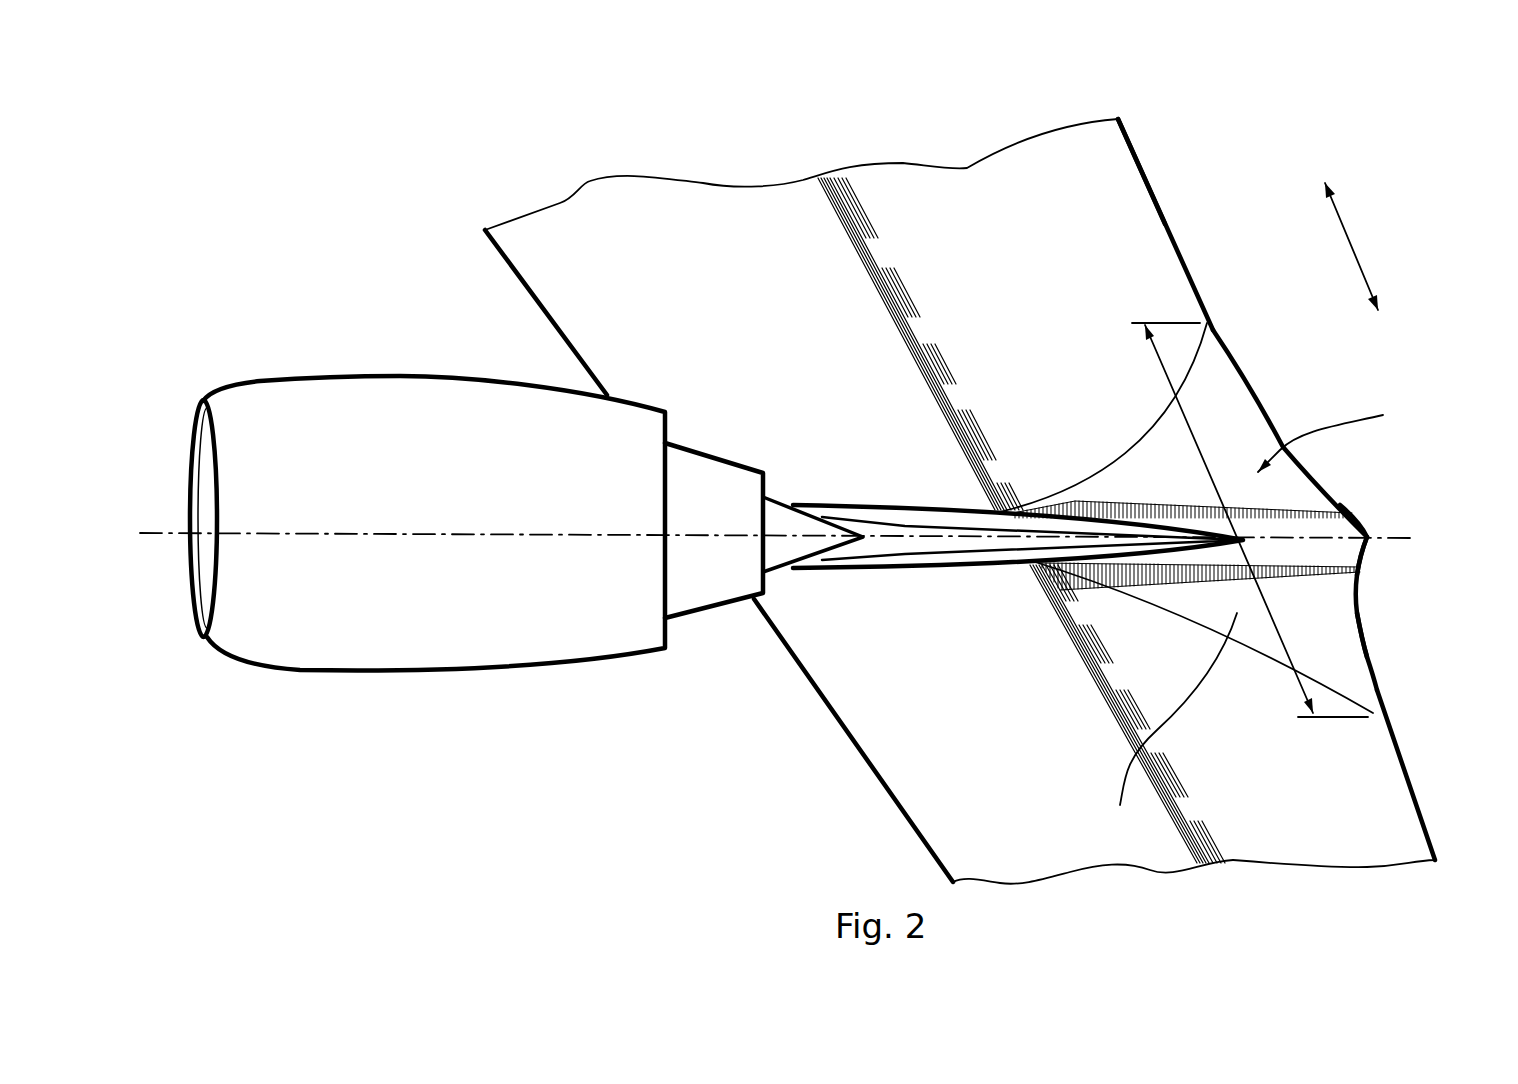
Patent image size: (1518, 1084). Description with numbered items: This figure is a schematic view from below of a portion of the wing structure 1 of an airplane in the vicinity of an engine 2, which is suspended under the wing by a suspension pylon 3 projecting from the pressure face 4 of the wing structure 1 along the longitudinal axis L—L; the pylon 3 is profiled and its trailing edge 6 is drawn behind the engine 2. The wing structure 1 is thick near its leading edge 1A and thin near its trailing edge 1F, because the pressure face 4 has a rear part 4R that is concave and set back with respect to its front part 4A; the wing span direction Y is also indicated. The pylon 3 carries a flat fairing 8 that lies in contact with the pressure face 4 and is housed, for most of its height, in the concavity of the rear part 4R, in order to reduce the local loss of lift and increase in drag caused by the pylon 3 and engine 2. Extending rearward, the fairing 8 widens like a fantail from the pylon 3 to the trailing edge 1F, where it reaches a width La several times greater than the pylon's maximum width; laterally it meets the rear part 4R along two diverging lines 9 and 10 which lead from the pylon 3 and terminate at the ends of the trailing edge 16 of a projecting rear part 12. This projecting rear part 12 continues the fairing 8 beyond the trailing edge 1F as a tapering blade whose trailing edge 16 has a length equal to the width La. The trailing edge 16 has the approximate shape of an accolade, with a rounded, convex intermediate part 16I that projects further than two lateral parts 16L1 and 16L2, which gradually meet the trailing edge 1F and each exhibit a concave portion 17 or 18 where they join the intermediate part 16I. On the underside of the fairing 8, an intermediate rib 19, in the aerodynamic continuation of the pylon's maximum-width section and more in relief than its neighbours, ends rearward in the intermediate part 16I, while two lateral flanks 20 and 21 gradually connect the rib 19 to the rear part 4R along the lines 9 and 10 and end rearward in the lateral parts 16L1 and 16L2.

The wing structure 1 is at (1167, 160).
The leading edge 1A is at (803, 673).
The trailing edge 1F is at (1165, 218).
The engine 2 is at (370, 418).
The suspension pylon 3 is at (963, 522).
The pressure face 4 is at (718, 252).
The front part of the pressure face 4A is at (938, 773).
The rear part of the pressure face 4R is at (1327, 802).
The trailing edge of the pylon 6 is at (1053, 543).
The fairing 8 is at (1329, 437).
The diverging line 9 is at (1127, 460).
The diverging line 10 is at (1153, 605).
The projecting rear part 12 is at (1227, 372).
The trailing edge of the projecting rear part 16 is at (1378, 690).
The intermediate part 16I is at (1367, 532).
The lateral part 16L1 is at (1260, 387).
The lateral part 16L2 is at (1363, 640).
The concave portion 17 is at (1320, 490).
The concave portion 18 is at (1362, 592).
The intermediate rib 19 is at (1293, 557).
The lateral flank 20 is at (1203, 407).
The lateral flank 21 is at (1171, 725).
The width of the fairing at the trailing edge La is at (1290, 676).
The wing span Y is at (1351, 246).
The longitudinal axis L is at (780, 522).